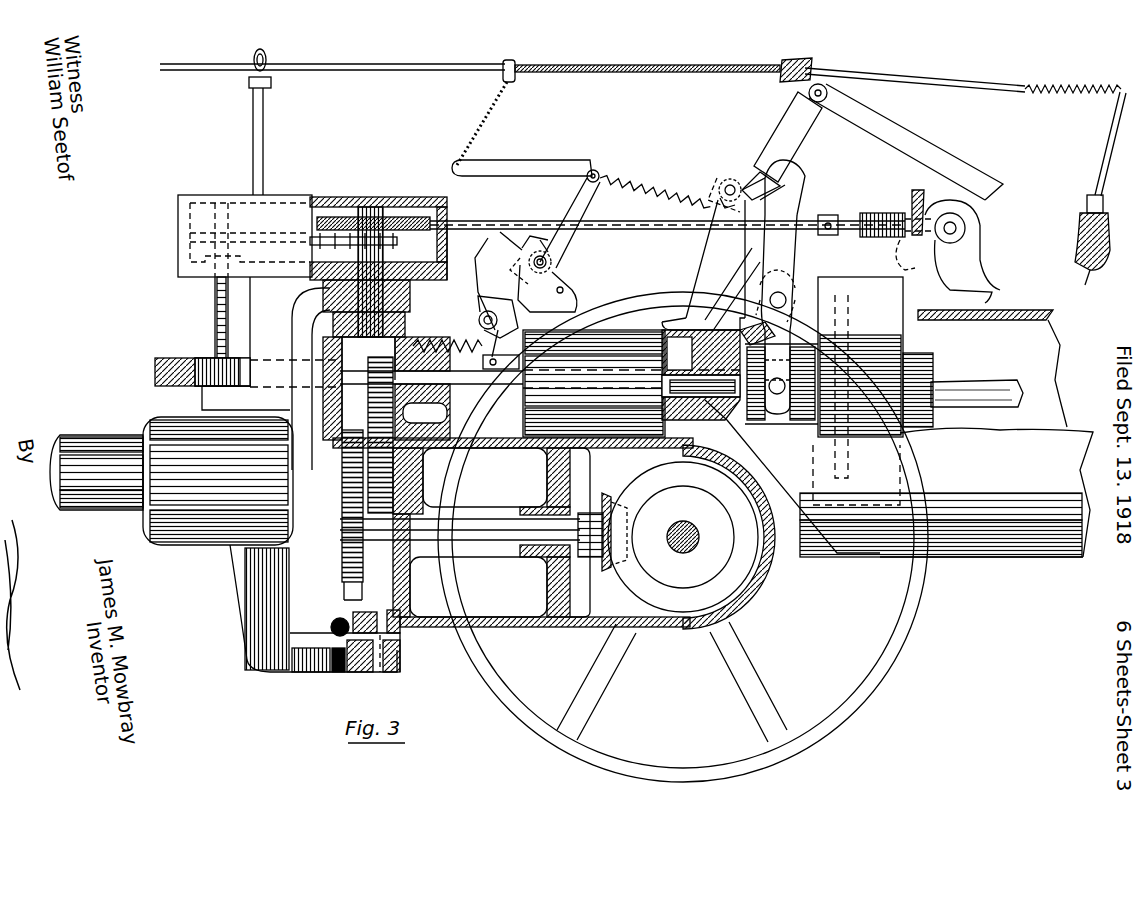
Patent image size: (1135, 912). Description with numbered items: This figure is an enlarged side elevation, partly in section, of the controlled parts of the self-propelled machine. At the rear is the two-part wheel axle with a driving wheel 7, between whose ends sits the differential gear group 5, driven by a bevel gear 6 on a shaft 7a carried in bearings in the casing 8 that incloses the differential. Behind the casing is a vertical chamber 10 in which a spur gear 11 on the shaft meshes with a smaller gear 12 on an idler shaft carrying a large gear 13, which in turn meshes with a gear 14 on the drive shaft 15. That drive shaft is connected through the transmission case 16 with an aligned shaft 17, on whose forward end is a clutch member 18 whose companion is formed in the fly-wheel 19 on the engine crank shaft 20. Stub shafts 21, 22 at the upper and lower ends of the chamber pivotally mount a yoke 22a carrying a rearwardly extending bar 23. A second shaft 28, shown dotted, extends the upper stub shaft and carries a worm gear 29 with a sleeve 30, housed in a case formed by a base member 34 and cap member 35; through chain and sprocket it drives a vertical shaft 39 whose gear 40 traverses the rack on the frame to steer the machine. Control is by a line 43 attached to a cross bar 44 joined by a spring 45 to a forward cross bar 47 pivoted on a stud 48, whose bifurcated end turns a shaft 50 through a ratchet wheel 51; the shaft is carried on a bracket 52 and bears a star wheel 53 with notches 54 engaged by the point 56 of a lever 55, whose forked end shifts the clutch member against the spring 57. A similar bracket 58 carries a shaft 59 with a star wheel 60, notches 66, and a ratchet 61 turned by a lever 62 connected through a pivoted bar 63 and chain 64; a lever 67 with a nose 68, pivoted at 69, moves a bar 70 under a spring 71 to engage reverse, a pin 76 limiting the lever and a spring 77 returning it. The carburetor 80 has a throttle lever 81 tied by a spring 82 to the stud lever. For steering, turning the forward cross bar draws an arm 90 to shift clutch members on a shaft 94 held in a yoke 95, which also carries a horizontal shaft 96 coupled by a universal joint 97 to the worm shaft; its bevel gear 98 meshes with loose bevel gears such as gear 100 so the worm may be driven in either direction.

The differential gear group 5 is at (683, 548).
The bevel gear 6 is at (606, 494).
The wheel 7 is at (922, 606).
The shaft 7a is at (500, 540).
The casing 8 is at (537, 628).
The vertical chamber 10 is at (345, 627).
The vertical shaft 11 is at (342, 576).
The gear 12 is at (352, 430).
The large gear 13 is at (395, 486).
The gear 14 is at (368, 383).
The drive shaft 15 is at (470, 378).
The transmission case 16 is at (631, 383).
The shaft 17 is at (701, 375).
The clutch member 18 is at (807, 432).
The fly-wheel 19 is at (873, 391).
The crank shaft 20 is at (975, 382).
The stub shaft 21 is at (323, 289).
The stub shaft 22 is at (405, 620).
The yoke 22a is at (270, 544).
The bar 23 is at (96, 472).
The second shaft 28 is at (385, 263).
The worm gear 29 is at (405, 215).
The sleeve 30 is at (362, 246).
The base member 34 is at (447, 275).
The cap member 35 is at (245, 236).
The vertical shaft 39 is at (214, 294).
The gear 40 is at (204, 358).
The line 43 is at (360, 72).
The cross bar 44 is at (512, 64).
The spring 45 is at (640, 68).
The forward cross bar 47 is at (790, 62).
The stud 48 is at (770, 150).
The shaft 50 is at (716, 192).
The ratchet wheel 51 is at (715, 182).
The bracket 52 is at (715, 259).
The star wheel 53 is at (722, 178).
The notch 54 is at (729, 178).
The lever 55 is at (792, 186).
The point 56 is at (778, 172).
The spring 57 is at (714, 328).
The bracket 58 is at (547, 288).
The shaft 59 is at (556, 260).
The star wheel 60 is at (535, 250).
The ratchet 61 is at (560, 270).
The lever 62 is at (578, 219).
The pivoted bar 63 is at (533, 162).
The chain 64 is at (486, 102).
The notch 66 is at (545, 250).
The lever 67 is at (498, 281).
The nose 68 is at (530, 255).
The pivot 69 is at (478, 312).
The bar 70 is at (510, 372).
The spring 71 is at (423, 340).
The pin 76 is at (565, 290).
The spring 77 is at (615, 178).
The carburetor 80 is at (1078, 238).
The lever 81 is at (1100, 130).
The spring 82 is at (1075, 88).
The arm 90 is at (895, 134).
The shaft 94 is at (962, 232).
The yoke 95 is at (960, 285).
The horizontal shaft 96 is at (852, 222).
The universal joint 97 is at (828, 214).
The bevel gear 98 is at (914, 200).
The bevel gear 100 is at (966, 222).